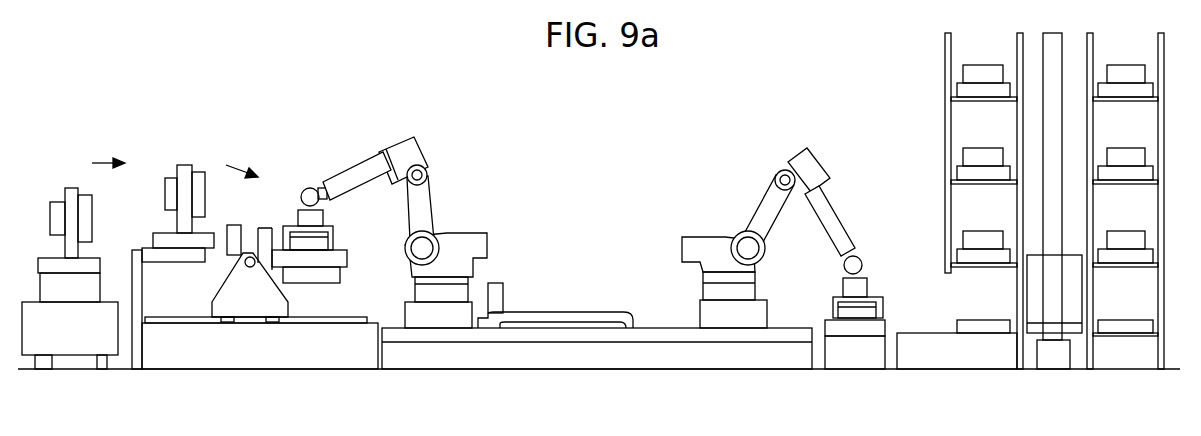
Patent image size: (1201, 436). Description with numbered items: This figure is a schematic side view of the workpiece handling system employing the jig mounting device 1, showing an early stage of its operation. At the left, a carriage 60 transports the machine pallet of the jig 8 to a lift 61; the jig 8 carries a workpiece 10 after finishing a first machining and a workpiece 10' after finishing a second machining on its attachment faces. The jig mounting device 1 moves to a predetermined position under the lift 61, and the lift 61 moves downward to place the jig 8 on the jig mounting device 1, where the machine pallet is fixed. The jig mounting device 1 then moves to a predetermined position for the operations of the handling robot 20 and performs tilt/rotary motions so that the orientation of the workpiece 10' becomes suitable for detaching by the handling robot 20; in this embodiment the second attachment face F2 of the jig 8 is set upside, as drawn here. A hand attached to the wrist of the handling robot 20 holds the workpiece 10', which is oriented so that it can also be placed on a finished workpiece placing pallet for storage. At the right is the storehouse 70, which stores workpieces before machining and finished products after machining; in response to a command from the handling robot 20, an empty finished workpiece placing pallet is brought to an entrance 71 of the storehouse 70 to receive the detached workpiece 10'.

The jig mounting device 1 is at (255, 310).
The jig 8 is at (65, 188).
The workpiece 10 is at (257, 191).
The workpiece 10' is at (249, 145).
The handling robot 20 is at (457, 212).
The carriage 60 is at (75, 347).
The lift 61 is at (138, 250).
The storehouse 70 is at (931, 143).
The entrance 71 is at (867, 330).
The second attachment face F2 is at (343, 249).